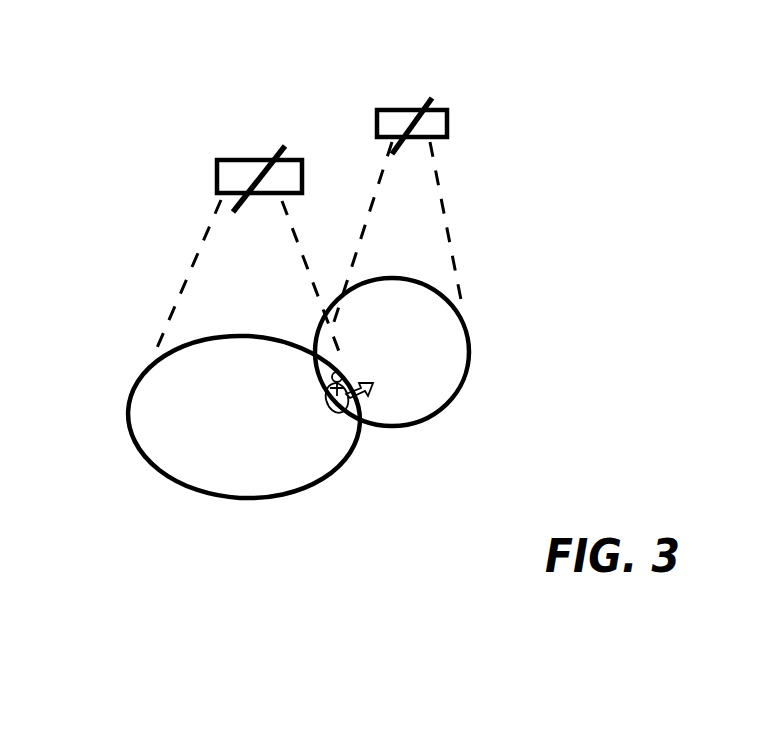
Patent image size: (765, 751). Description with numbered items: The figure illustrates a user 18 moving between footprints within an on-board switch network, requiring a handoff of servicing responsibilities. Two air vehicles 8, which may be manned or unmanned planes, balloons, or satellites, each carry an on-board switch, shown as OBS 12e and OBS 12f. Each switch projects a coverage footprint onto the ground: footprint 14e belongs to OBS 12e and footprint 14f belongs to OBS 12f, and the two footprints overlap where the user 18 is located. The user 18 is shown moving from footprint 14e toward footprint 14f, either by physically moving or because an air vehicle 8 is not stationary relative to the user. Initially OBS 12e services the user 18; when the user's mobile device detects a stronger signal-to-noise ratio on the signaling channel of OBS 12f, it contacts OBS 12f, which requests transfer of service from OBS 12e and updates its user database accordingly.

The air vehicle 8 is at (225, 160).
The OBS 12e is at (252, 160).
The OBS 12f is at (403, 108).
The footprint 14e is at (137, 453).
The footprint 14f is at (467, 377).
The user 18 is at (338, 405).